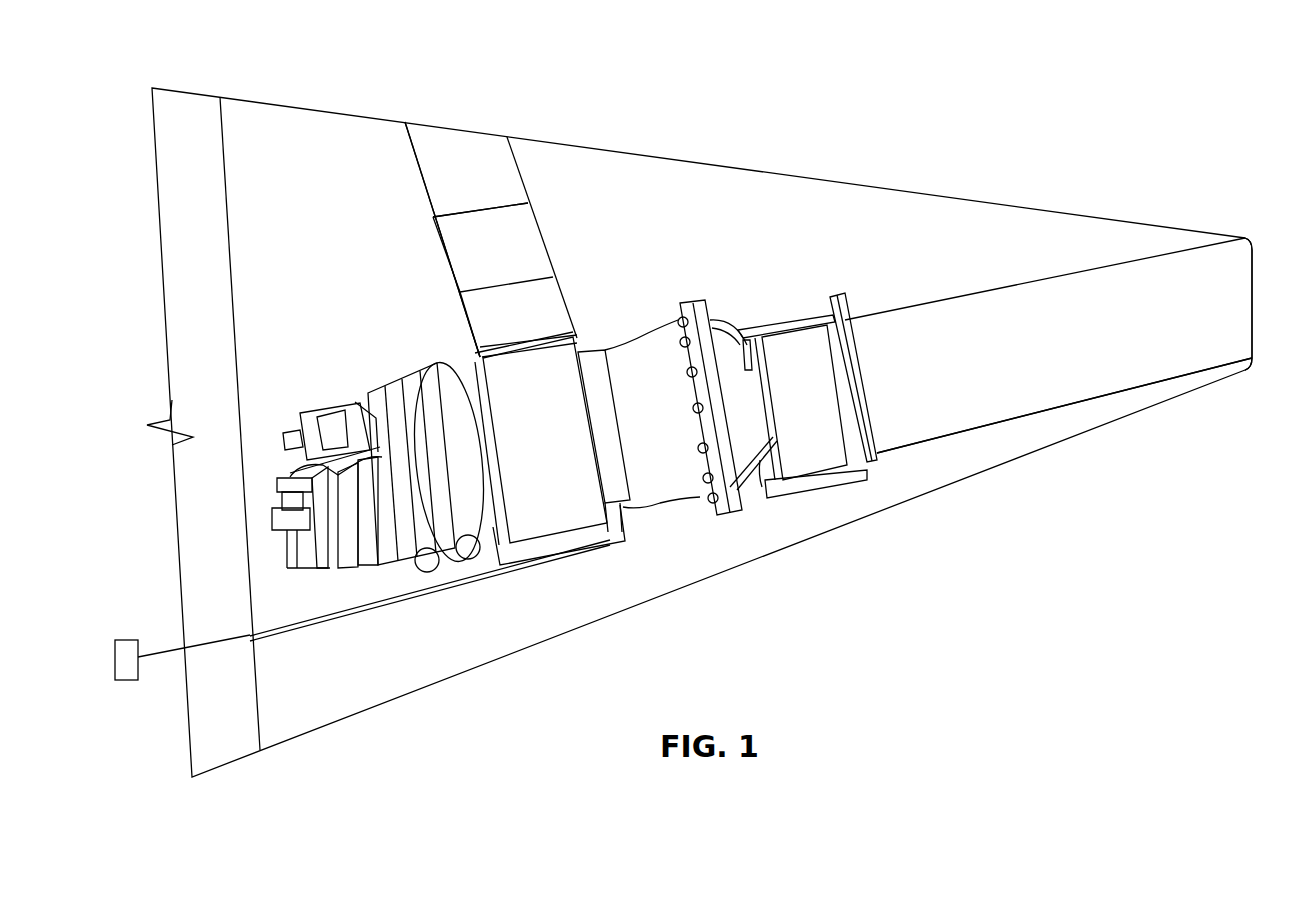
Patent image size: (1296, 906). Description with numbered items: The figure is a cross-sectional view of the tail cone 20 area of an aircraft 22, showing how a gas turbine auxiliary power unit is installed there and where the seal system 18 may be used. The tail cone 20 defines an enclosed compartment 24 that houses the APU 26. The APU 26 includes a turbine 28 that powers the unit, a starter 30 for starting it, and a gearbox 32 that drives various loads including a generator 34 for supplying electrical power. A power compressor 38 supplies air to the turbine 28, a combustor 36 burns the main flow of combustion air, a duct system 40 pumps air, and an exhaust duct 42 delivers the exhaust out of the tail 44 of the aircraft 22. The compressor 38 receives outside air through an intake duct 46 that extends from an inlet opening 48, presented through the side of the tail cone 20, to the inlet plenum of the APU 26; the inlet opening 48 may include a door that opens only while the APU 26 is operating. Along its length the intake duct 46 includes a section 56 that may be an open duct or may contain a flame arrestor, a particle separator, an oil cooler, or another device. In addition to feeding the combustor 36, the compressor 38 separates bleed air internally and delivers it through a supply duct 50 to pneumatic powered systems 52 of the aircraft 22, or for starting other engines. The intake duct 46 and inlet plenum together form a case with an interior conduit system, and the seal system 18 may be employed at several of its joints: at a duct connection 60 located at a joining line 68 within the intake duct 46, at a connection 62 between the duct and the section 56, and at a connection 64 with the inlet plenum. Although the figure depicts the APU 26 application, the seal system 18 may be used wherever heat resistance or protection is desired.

The seal system 18 is at (538, 158).
The tail cone 20 is at (1052, 208).
The aircraft 22 is at (185, 108).
The compartment 24 is at (865, 204).
The APU 26 is at (618, 266).
The turbine 28 is at (712, 322).
The starter 30 is at (320, 415).
The gearbox 32 is at (347, 568).
The generator 34 is at (323, 570).
The combustor 36 is at (648, 334).
The power compressor 38 is at (563, 447).
The duct system 40 is at (778, 317).
The exhaust duct 42 is at (1097, 410).
The tail 44 is at (1246, 238).
The intake duct 46 is at (535, 197).
The inlet opening 48 is at (462, 148).
The supply duct 50 is at (467, 587).
The pneumatic powered systems 52 is at (124, 682).
The section 56 is at (462, 315).
The duct connection 60 is at (465, 213).
The connection 62 is at (510, 281).
The connection 64 is at (528, 341).
The joining line 68 is at (438, 220).